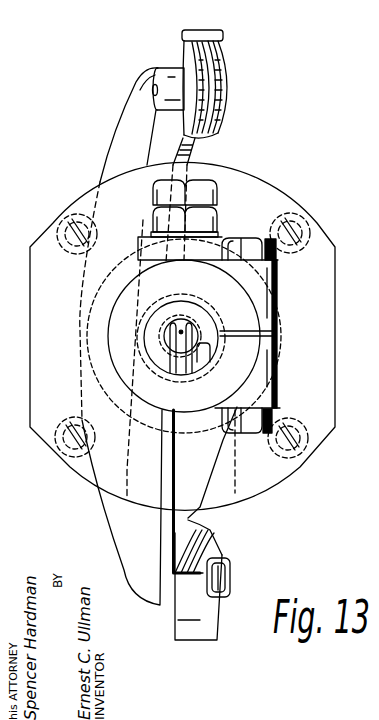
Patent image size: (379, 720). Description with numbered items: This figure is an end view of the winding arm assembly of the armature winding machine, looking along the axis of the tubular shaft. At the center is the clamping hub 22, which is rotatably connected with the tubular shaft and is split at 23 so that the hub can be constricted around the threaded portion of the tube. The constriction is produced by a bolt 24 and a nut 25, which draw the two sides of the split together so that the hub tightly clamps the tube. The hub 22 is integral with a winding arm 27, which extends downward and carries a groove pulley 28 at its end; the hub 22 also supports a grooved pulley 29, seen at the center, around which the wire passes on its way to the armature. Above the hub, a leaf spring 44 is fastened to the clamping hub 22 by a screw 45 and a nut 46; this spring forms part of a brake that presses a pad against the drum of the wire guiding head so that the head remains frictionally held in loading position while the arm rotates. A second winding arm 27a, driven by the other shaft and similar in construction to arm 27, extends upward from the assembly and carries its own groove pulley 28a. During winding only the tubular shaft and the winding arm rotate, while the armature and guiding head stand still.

The clamping hub 22 is at (117, 327).
The split 23 is at (278, 333).
The bolt 24 is at (277, 252).
The nut 25 is at (277, 413).
The winding arm 27 is at (188, 518).
The winding arm 27a is at (116, 128).
The groove pulley 28 is at (208, 545).
The groove pulley 28a is at (227, 80).
The grooved pulley 29 is at (184, 339).
The leaf spring 44 is at (217, 238).
The screw 45 is at (217, 192).
The nut 46 is at (217, 212).